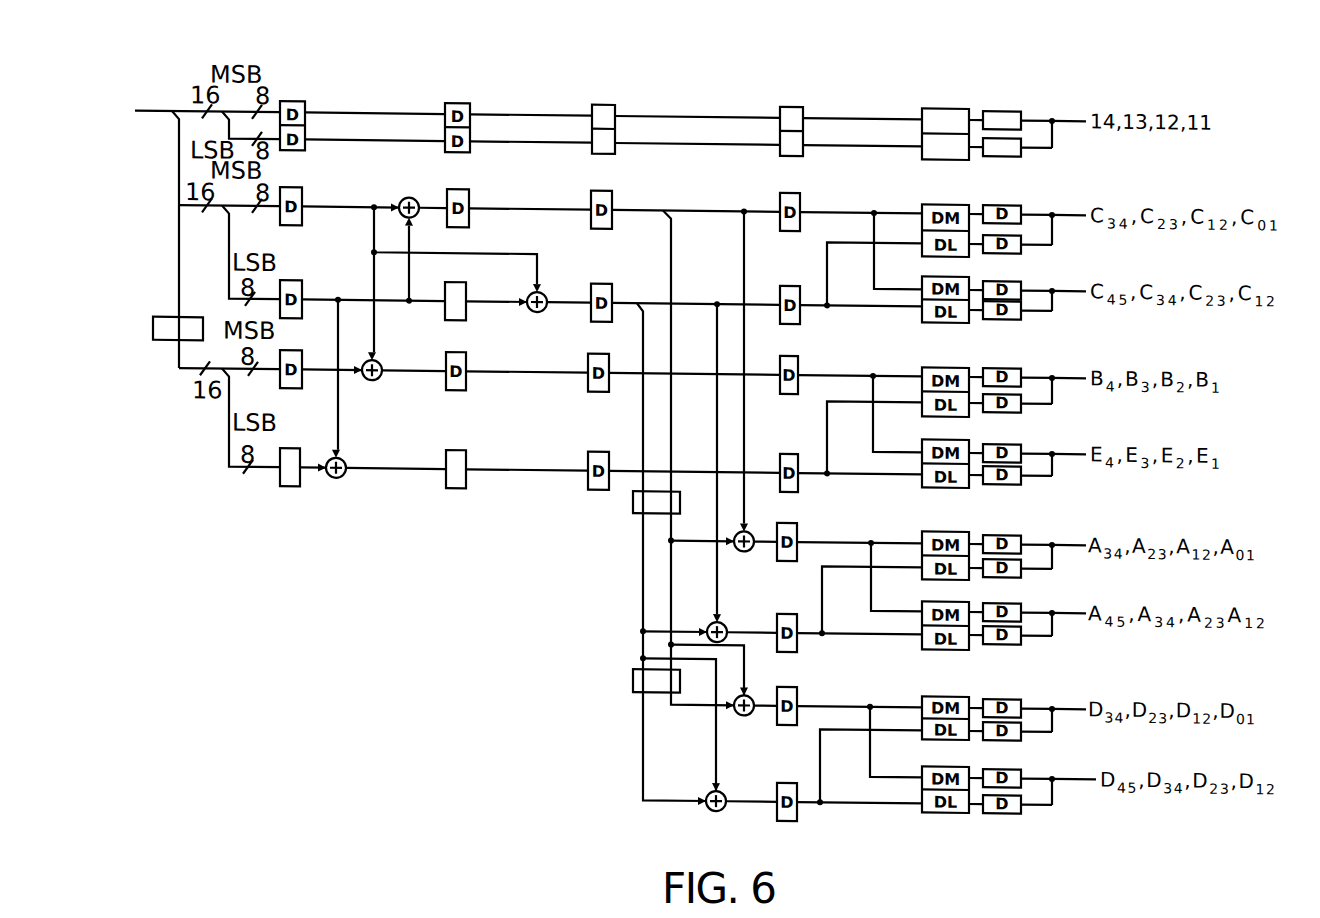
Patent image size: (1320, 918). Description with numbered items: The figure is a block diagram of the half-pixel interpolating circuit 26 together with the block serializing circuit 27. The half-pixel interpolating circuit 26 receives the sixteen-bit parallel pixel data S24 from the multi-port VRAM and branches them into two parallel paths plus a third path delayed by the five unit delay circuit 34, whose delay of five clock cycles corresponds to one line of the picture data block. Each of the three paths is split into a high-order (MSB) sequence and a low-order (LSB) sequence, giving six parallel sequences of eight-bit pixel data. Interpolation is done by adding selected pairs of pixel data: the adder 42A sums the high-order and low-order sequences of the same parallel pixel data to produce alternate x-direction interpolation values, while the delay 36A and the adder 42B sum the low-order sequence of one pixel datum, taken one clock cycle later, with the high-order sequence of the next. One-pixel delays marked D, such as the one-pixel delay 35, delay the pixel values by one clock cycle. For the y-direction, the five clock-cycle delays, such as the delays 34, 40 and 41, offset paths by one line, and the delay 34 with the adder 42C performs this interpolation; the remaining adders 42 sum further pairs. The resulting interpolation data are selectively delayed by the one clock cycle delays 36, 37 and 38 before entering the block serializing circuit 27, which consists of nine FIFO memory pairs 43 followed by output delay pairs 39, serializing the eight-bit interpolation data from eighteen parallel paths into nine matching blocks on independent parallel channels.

The half-pixel interpolating circuit 26 is at (505, 50).
The block serializing circuit 27 is at (978, 870).
The five unit delay circuit 34 is at (165, 339).
The one-pixel delay 35 is at (288, 488).
The one clock cycle delay 36 is at (457, 488).
The delay 36A is at (467, 288).
The one clock cycle delay 37 is at (616, 96).
The one clock cycle delay 38 is at (805, 96).
The D delay circuit pair 39 is at (1021, 100).
The five clock cycle delay 40 is at (633, 497).
The five clock cycle delay 41 is at (633, 677).
The adder 42 is at (342, 474).
The adder 42A is at (410, 193).
The adder 42B is at (538, 307).
The adder 42C is at (380, 373).
The FIFO memory pair 43 is at (944, 96).
The parallel pixel data S24 is at (150, 109).